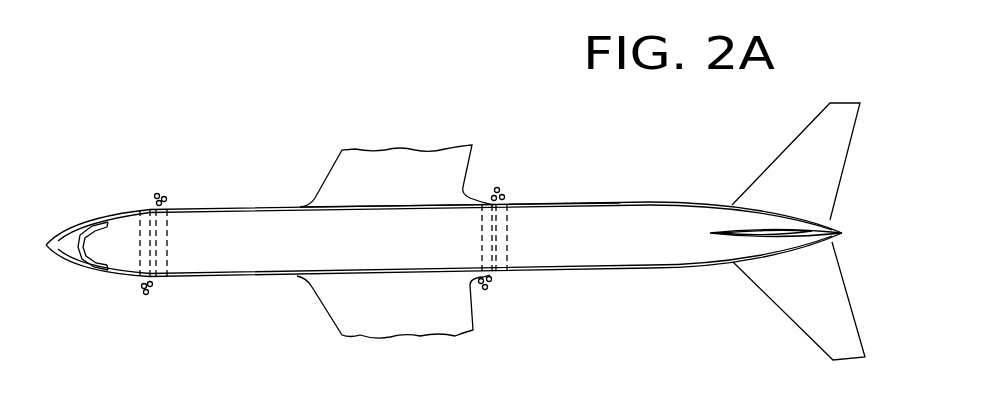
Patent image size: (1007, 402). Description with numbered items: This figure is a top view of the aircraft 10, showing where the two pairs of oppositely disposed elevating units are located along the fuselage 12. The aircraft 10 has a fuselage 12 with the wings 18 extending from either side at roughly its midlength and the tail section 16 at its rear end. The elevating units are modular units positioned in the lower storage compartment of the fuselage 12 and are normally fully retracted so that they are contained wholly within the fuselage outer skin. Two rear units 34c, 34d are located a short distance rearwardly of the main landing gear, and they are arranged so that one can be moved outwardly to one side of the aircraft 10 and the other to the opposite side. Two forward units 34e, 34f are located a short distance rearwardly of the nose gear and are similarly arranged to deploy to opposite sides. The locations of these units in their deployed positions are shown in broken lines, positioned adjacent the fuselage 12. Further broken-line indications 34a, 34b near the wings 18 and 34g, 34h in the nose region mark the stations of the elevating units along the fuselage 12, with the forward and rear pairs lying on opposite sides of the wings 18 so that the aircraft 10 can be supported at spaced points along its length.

The aircraft 10 is at (492, 138).
The fuselage 12 is at (275, 218).
The tail section 16 is at (780, 232).
The wings 18 is at (425, 160).
The elevating unit 34a is at (485, 238).
The elevating unit 34b is at (503, 238).
The rear elevating unit 34c is at (505, 193).
The rear elevating unit 34d is at (491, 292).
The forward elevating unit 34e is at (166, 195).
The forward elevating unit 34f is at (153, 294).
The elevating unit 34g is at (140, 230).
The elevating unit 34h is at (165, 246).